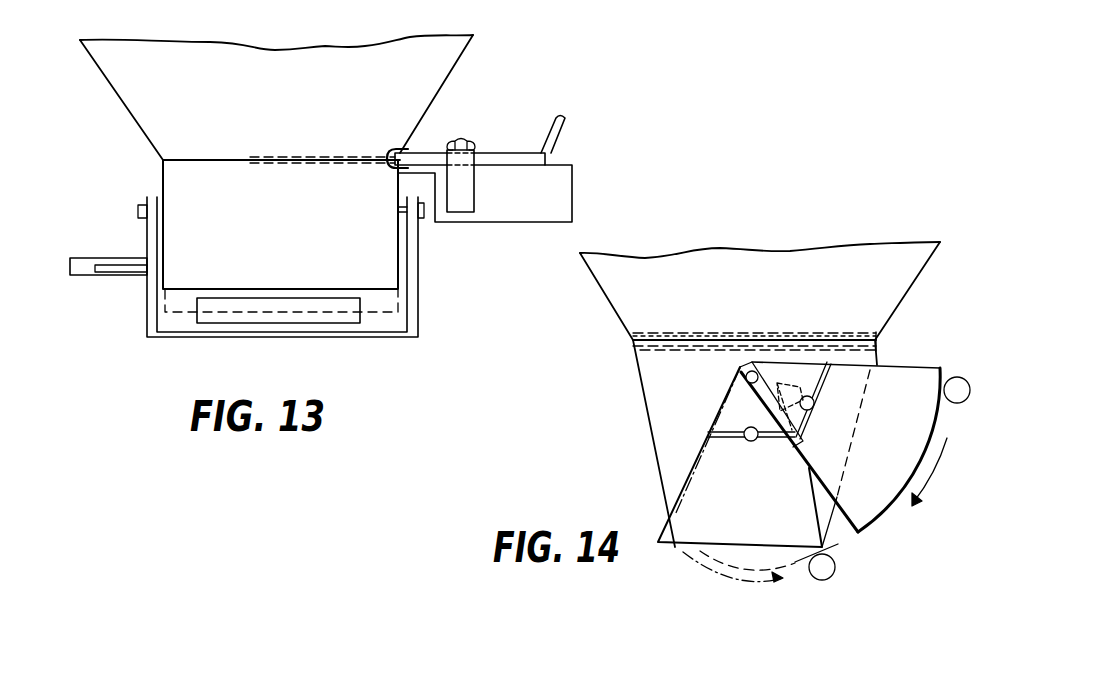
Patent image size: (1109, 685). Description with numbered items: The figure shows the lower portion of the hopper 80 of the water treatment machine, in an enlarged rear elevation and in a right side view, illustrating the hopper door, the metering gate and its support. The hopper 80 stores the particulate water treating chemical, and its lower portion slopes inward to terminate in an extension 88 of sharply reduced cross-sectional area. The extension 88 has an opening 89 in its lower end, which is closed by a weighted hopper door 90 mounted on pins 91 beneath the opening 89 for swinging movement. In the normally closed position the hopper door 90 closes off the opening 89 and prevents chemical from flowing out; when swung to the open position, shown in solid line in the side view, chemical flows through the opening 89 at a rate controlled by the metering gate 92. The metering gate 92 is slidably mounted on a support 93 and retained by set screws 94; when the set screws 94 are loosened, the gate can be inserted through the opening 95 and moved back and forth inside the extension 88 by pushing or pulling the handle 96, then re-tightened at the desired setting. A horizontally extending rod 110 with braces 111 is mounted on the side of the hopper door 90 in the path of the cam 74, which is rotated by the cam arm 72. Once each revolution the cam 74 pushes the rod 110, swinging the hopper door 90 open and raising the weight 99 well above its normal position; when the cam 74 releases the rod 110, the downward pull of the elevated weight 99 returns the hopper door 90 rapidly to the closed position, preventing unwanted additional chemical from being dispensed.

In FIG. 14, the cam arm 72 is at (780, 414).
In FIG. 14, the cam 74 is at (823, 379).
In FIG. 13, the hopper 80 is at (354, 92).
In FIG. 14, the hopper 80 is at (705, 307).
In FIG. 13, the extension 88 is at (302, 258).
In FIG. 14, the extension 88 is at (690, 421).
In FIG. 13, the opening 89 is at (373, 313).
In FIG. 13, the hopper door 90 is at (418, 302).
In FIG. 14, the hopper door 90 is at (915, 421).
In FIG. 13, the pins 91 is at (163, 215).
In FIG. 14, the pins 91 is at (755, 369).
In FIG. 13, the metering gate 92 is at (293, 153).
In FIG. 14, the metering gate 92 is at (880, 343).
In FIG. 13, the support 93 is at (573, 181).
In FIG. 13, the set screws 94 is at (460, 141).
In FIG. 13, the opening 95 is at (412, 152).
In FIG. 14, the opening 95 is at (829, 336).
In FIG. 13, the handle 96 is at (562, 120).
In FIG. 13, the weight 99 is at (342, 313).
In FIG. 14, the weight 99 is at (960, 403).
In FIG. 13, the rod 110 is at (100, 275).
In FIG. 14, the rod 110 is at (812, 407).
In FIG. 13, the braces 111 is at (132, 272).
In FIG. 14, the braces 111 is at (720, 440).